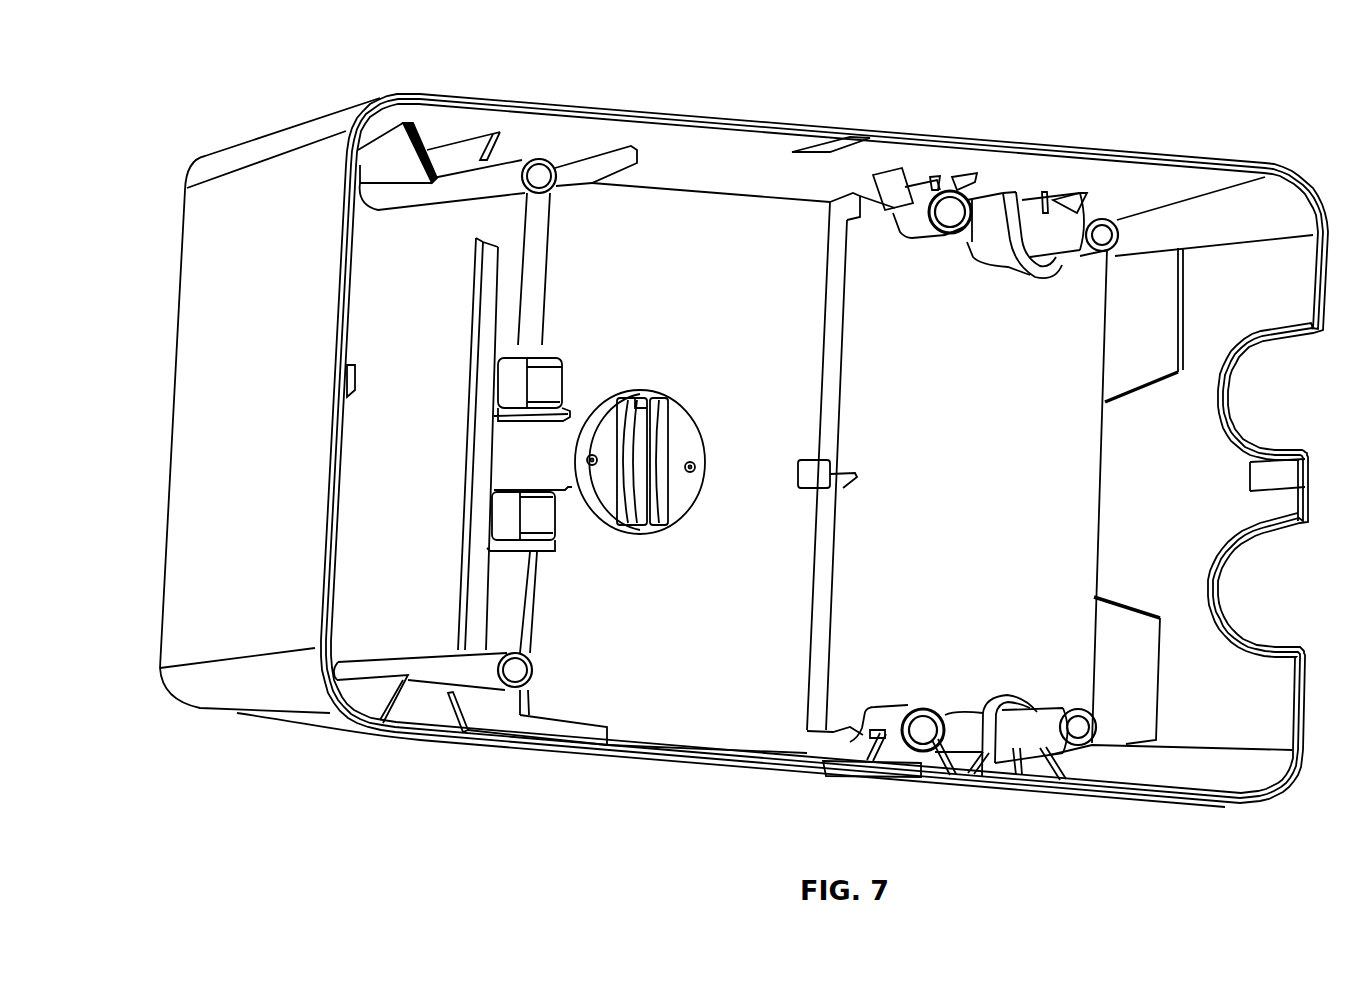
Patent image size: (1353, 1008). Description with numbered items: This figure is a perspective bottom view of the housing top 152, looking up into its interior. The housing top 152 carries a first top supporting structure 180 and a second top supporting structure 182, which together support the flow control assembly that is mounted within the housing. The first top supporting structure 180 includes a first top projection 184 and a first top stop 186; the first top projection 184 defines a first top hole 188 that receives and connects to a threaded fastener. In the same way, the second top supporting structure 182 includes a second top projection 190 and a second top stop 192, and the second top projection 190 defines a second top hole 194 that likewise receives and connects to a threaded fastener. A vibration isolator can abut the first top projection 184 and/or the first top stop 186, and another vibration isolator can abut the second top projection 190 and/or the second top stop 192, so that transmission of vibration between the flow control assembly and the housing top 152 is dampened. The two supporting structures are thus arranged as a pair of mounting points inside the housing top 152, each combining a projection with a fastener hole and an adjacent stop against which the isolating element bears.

The housing top 152 is at (192, 156).
The first top supporting structure 180 is at (1026, 169).
The second top supporting structure 182 is at (1003, 759).
The first top projection 184 is at (1082, 253).
The first top stop 186 is at (1006, 205).
The first top hole 188 is at (1133, 174).
The second top projection 190 is at (1063, 712).
The second top stop 192 is at (1001, 708).
The second top hole 194 is at (1080, 728).